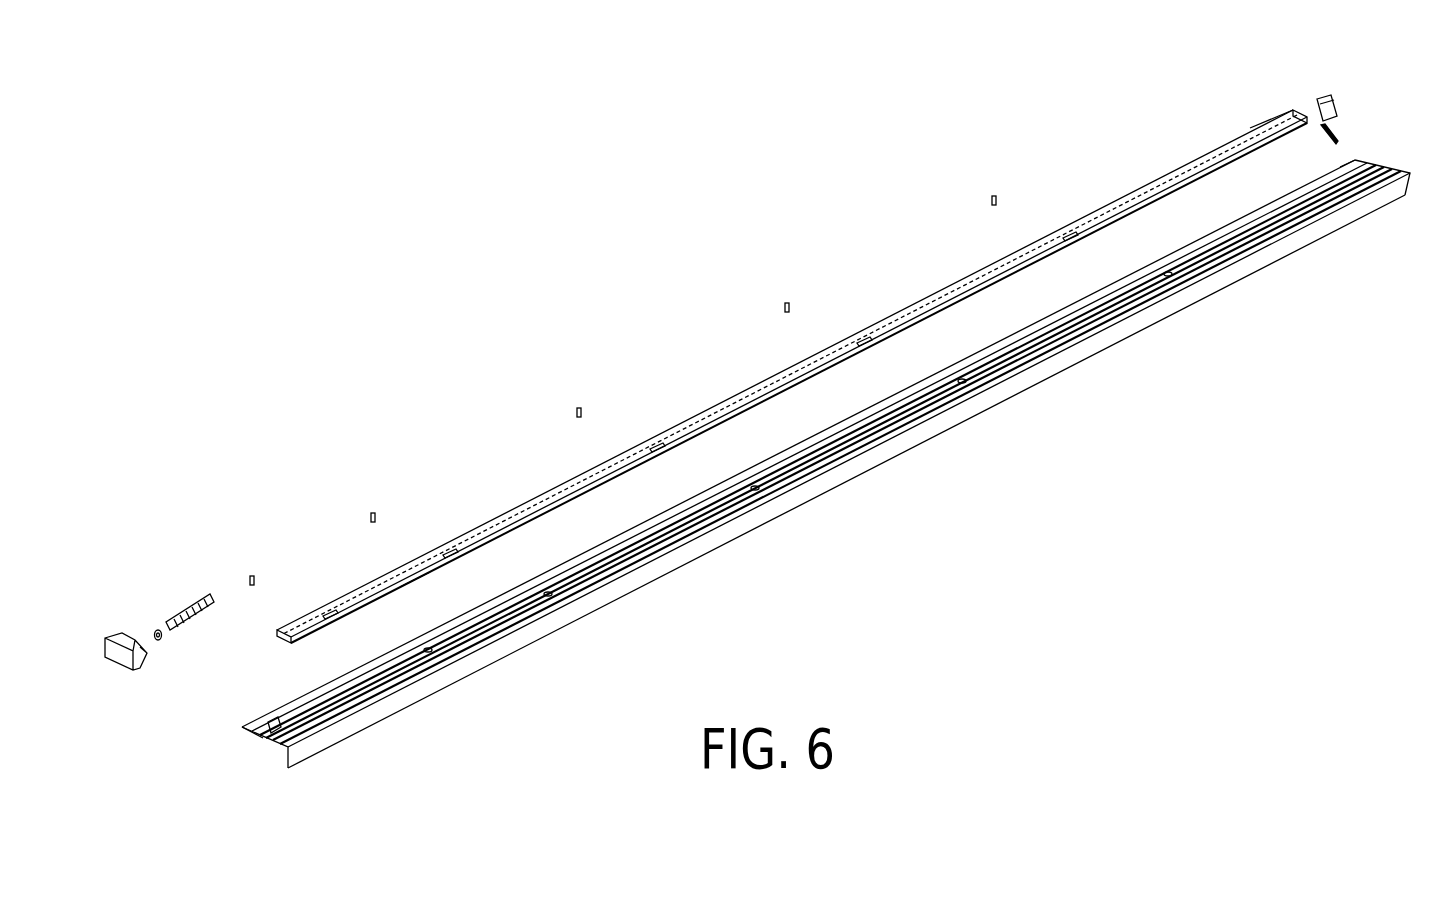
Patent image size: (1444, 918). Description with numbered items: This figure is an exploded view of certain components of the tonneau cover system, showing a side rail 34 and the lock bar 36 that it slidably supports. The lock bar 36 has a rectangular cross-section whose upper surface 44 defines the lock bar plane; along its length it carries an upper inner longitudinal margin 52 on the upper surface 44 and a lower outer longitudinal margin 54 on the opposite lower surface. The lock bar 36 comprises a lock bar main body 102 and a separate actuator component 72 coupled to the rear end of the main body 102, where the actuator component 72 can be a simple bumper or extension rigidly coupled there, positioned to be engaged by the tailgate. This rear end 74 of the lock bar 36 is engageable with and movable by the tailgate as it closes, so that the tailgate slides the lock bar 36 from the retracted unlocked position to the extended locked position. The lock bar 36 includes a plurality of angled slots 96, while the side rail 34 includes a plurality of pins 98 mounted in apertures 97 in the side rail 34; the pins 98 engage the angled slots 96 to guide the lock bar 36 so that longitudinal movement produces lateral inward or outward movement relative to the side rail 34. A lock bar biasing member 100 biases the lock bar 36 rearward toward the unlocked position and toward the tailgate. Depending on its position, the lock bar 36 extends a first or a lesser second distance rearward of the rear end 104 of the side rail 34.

The side rail 34 is at (1135, 372).
The lock bar 36 is at (1323, 34).
The upper surface 44 is at (756, 386).
The upper inner longitudinal margin 52 is at (393, 576).
The lower outer longitudinal margin 54 is at (416, 585).
The actuator component 72 is at (1325, 96).
The rear end of the lock bar 74 is at (1340, 142).
The angled slots 96 is at (1068, 232).
The apertures 97 is at (1175, 275).
The pins 98 is at (991, 196).
The lock bar biasing member 100 is at (183, 616).
The lock bar main body 102 is at (1287, 118).
The rear end of the side rail 104 is at (1362, 158).